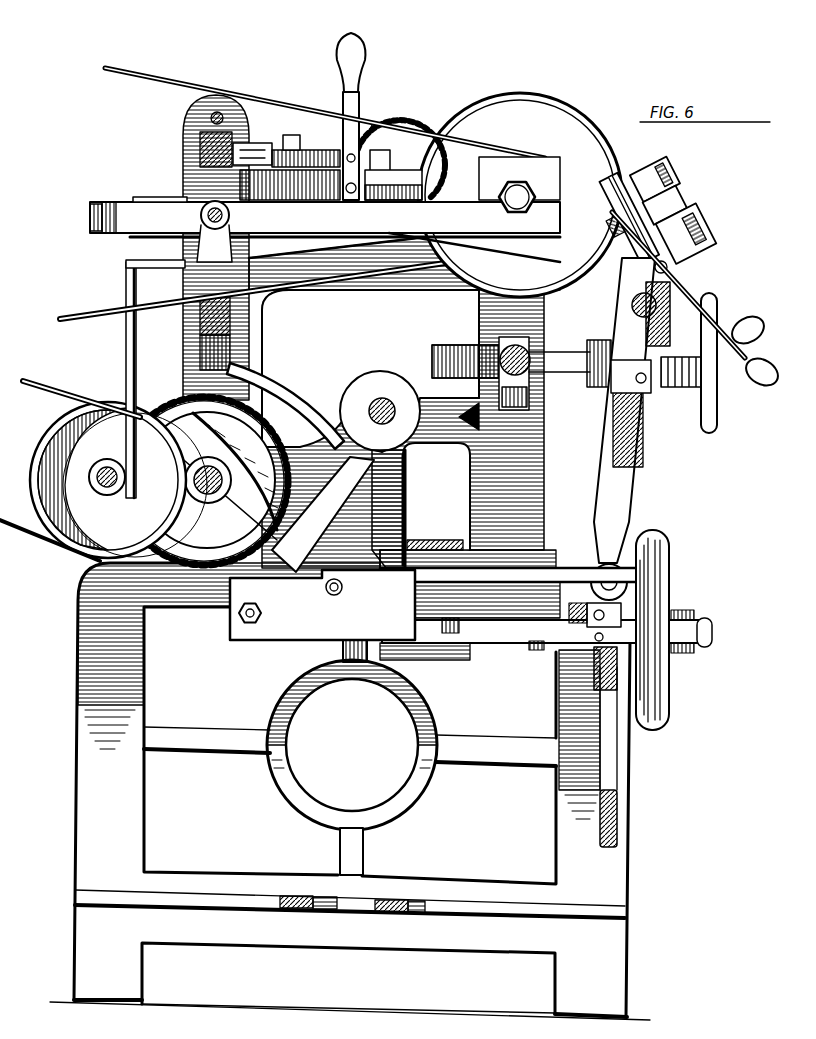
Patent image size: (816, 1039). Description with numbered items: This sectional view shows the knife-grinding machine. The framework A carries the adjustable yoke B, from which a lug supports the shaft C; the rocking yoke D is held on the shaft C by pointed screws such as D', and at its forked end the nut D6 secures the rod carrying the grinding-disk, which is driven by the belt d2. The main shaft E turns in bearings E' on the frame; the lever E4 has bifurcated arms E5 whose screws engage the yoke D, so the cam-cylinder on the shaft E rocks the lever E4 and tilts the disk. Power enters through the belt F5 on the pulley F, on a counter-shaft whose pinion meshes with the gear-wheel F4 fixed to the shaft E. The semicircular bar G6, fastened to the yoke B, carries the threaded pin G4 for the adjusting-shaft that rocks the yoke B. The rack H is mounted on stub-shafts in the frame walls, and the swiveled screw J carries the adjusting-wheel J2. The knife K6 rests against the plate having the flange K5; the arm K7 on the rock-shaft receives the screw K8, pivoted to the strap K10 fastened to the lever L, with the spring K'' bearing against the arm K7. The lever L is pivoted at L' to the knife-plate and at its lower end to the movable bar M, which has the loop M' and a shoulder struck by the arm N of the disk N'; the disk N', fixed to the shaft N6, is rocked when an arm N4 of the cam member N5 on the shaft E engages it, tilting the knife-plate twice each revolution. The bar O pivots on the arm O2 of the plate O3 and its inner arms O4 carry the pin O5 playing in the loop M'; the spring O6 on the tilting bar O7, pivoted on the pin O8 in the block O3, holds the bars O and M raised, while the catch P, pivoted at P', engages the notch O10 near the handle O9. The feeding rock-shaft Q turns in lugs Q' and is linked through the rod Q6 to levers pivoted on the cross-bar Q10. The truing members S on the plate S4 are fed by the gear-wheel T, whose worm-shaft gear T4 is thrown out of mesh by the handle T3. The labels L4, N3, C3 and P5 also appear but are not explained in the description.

The framework A is at (350, 791).
The adjustable yoke B is at (183, 150).
The shaft C is at (147, 197).
The rocking yoke D is at (325, 219).
The screw D' is at (73, 220).
The nut D6 is at (560, 118).
The shaft E is at (190, 481).
The bearings E' is at (93, 481).
The lever E4 is at (130, 345).
The arms E5 is at (205, 226).
The pulley F is at (40, 438).
The gear-wheel F4 is at (287, 422).
The belt F5 is at (46, 378).
The threaded pin G4 is at (240, 613).
The semicircular-shaped bar G6 is at (298, 392).
The rack H is at (640, 462).
The screw J is at (580, 372).
The adjusting-wheel J2 is at (718, 312).
The flange K5 is at (612, 180).
The knife K6 is at (685, 203).
The arm K7 is at (700, 262).
The screw K8 is at (742, 385).
The spring K'' is at (664, 398).
The strap or clevis K10 is at (660, 420).
The lever L is at (627, 429).
The pivotal connection L' is at (635, 303).
The pivot L4 is at (632, 307).
The horizontally-movable bar M is at (511, 632).
The loop M' is at (376, 629).
The arm N is at (404, 511).
The disk N' is at (380, 393).
The pitman N3 is at (330, 480).
The arms N4 is at (204, 481).
The cam member N5 is at (209, 480).
The shaft N6 is at (388, 400).
The bar O is at (524, 629).
The arm O2 is at (625, 612).
The plate O3 is at (575, 680).
The arms O4 is at (340, 598).
The pin O5 is at (326, 592).
The spring O6 is at (455, 648).
The tilting bar O7 is at (640, 655).
The pin O8 is at (655, 712).
The handle O9 is at (690, 632).
The notch O10 is at (620, 628).
The disc C3 is at (665, 690).
The tilting catch P is at (474, 235).
The pivot P' is at (574, 559).
The bolt P5 is at (522, 192).
The rock-shaft Q is at (695, 231).
The lugs Q' is at (668, 177).
The rod Q6 is at (512, 566).
The cross-bar Q10 is at (440, 540).
The angled members S is at (400, 178).
The plate S4 is at (400, 116).
The gear-wheel T is at (278, 150).
The handle T3 is at (346, 38).
The gear-wheel T4 is at (372, 110).
The belt d2 is at (200, 88).